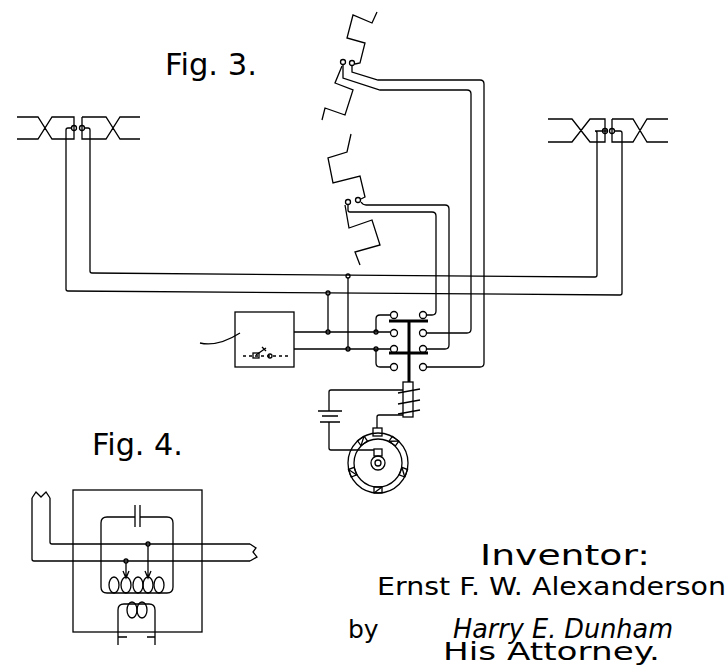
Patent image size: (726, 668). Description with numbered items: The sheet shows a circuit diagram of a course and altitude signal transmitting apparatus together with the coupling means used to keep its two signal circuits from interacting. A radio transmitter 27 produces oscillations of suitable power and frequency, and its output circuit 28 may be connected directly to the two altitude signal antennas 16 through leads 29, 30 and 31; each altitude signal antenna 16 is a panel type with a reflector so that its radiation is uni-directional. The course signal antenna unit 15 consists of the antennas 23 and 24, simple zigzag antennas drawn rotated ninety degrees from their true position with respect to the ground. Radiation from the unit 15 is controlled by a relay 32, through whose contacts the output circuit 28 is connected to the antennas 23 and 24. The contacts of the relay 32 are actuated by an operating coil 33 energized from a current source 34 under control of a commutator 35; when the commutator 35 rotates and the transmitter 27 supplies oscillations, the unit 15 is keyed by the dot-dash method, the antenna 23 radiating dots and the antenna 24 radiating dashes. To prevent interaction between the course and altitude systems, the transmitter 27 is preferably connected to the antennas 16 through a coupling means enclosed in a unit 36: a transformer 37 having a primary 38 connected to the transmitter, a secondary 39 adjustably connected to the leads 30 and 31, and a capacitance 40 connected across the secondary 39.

In FIG. 3, the course signal antenna unit 15 is at (416, 140).
In FIG. 3, the altitude signal antenna 16 is at (77, 116).
In FIG. 3, the antenna 23 is at (340, 69).
In FIG. 3, the antenna 24 is at (343, 205).
In FIG. 3, the radio transmitter 27 is at (188, 339).
In FIG. 3, the output circuit 28 is at (295, 333).
In FIG. 3, the lead 29 is at (347, 305).
In FIG. 4, the lead 29 is at (136, 644).
In FIG. 3, the lead 30 is at (145, 292).
In FIG. 4, the lead 30 is at (141, 510).
In FIG. 3, the lead 31 is at (512, 293).
In FIG. 4, the lead 31 is at (155, 530).
In FIG. 3, the relay 32 is at (403, 383).
In FIG. 3, the operating coil 33 is at (414, 401).
In FIG. 3, the current source 34 is at (320, 418).
In FIG. 3, the commutator 35 is at (406, 459).
In FIG. 4, the receiver unit 36 is at (193, 522).
In FIG. 4, the transformer 37 is at (113, 600).
In FIG. 4, the primary 38 is at (157, 606).
In FIG. 4, the secondary 39 is at (173, 593).
In FIG. 4, the capacitance 40 is at (133, 510).